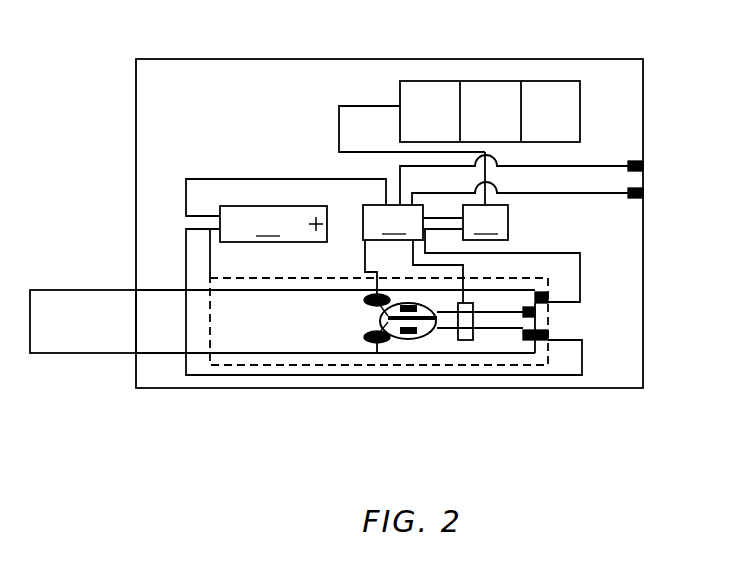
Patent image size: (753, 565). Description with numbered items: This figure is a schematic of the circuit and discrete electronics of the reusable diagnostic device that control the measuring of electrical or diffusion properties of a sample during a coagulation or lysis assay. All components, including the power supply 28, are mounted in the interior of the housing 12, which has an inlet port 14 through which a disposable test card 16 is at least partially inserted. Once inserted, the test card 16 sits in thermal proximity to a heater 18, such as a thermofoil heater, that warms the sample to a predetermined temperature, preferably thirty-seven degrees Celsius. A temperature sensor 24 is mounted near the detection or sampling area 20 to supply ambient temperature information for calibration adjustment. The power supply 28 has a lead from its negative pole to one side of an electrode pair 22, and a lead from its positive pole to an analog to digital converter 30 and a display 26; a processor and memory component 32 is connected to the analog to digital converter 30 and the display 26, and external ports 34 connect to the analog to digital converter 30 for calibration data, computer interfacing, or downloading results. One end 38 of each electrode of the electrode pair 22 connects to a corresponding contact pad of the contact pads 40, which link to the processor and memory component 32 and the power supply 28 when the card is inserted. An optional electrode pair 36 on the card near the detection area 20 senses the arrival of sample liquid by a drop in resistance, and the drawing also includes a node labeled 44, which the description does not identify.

The housing 12 is at (389, 201).
The inlet port 14 is at (300, 304).
The test card 16 is at (77, 337).
The heater 18 is at (379, 331).
The detection or sampling area 20 is at (430, 376).
The electrode pair 22 is at (403, 372).
The temperature sensor 24 is at (499, 367).
The display 26 is at (464, 85).
The power supply 28 is at (273, 224).
The analog to digital converter 30 is at (393, 222).
The processor and memory component 32 is at (485, 222).
The external ports 34 is at (673, 179).
The electrode pair 36 is at (345, 373).
The one end 38 is at (573, 376).
The contact pads 40 is at (573, 311).
The node 44 is at (349, 309).